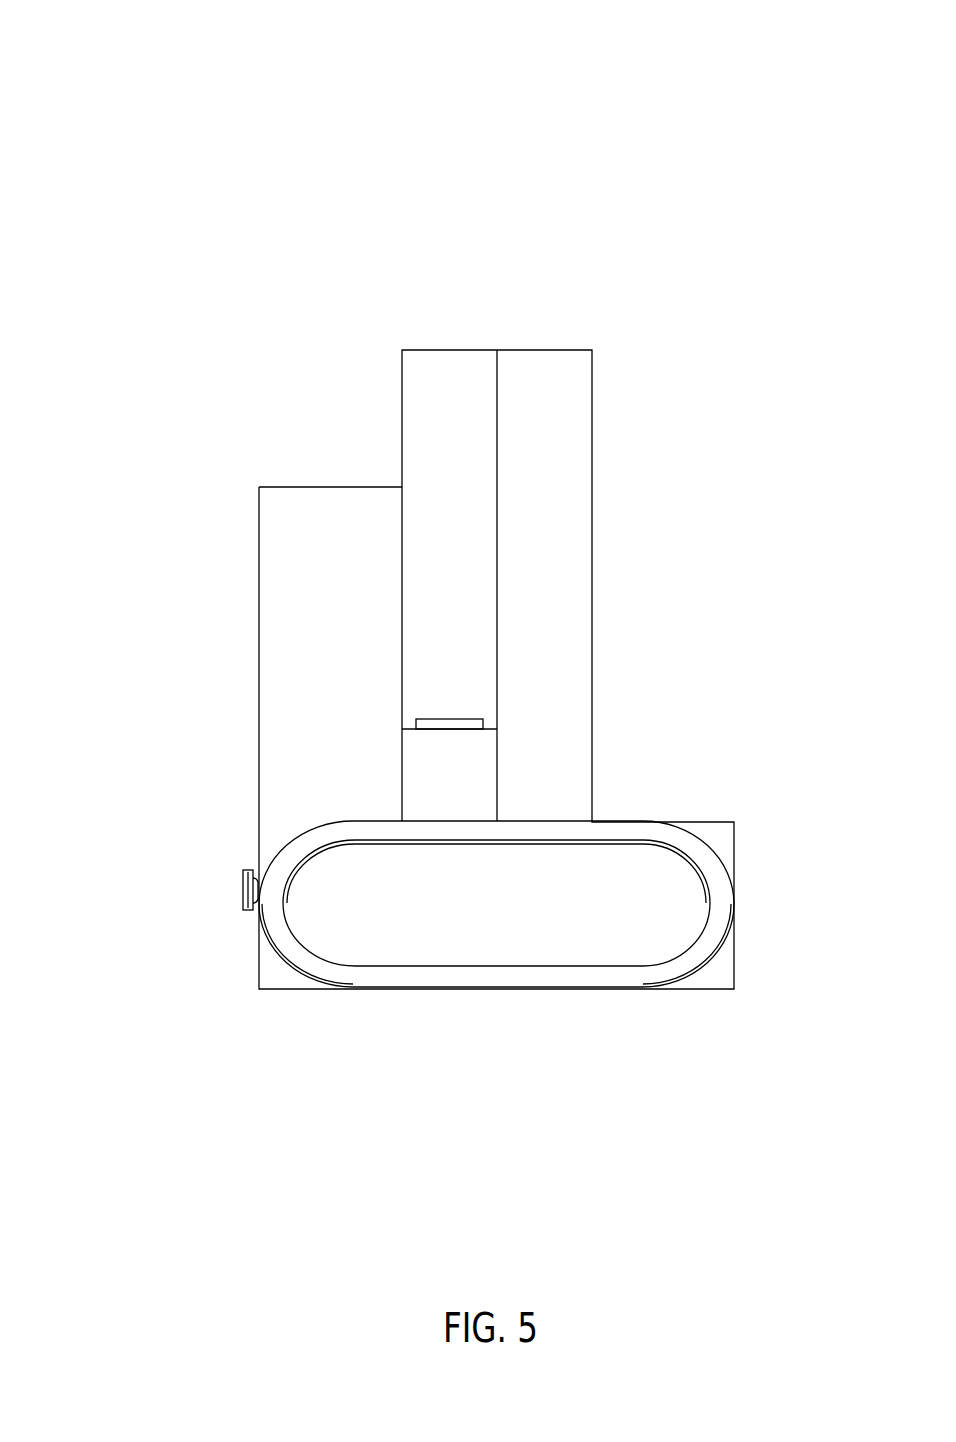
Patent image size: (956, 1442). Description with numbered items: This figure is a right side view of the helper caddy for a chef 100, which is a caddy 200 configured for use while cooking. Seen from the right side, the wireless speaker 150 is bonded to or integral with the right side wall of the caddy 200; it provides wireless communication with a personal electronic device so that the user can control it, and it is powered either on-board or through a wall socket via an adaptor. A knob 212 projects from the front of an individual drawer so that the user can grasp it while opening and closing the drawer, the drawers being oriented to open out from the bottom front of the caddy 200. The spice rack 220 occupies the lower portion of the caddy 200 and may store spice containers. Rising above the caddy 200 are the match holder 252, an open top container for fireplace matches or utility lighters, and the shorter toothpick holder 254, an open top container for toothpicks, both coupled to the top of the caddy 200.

The helper caddy for a chef 100 is at (113, 170).
The caddy 200 is at (722, 840).
The spice rack 220 is at (410, 1029).
The match holder 252 is at (447, 370).
The toothpick holder 254 is at (461, 723).
The wireless speaker 150 is at (648, 913).
The knob 212 is at (246, 890).